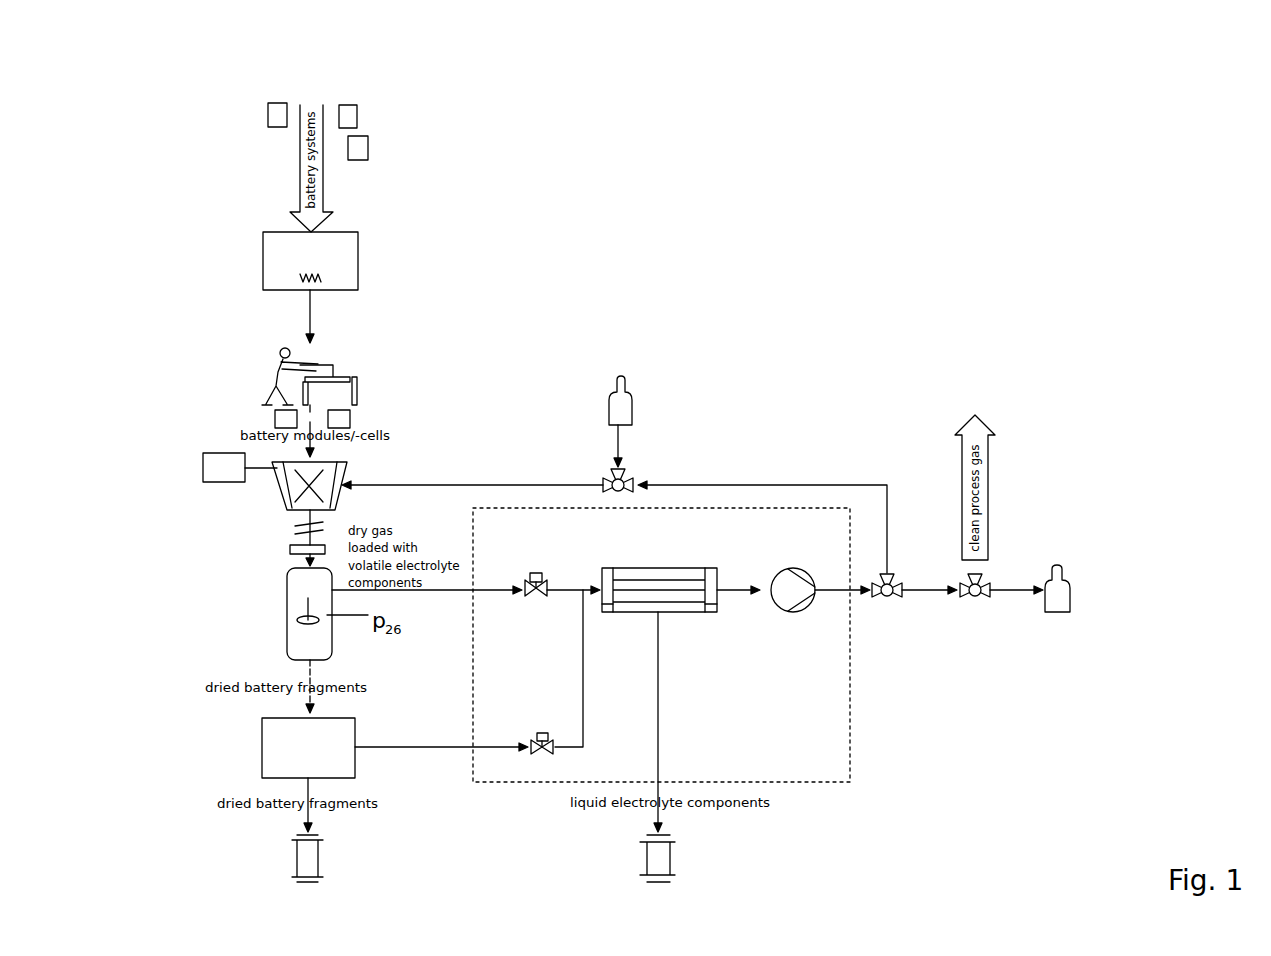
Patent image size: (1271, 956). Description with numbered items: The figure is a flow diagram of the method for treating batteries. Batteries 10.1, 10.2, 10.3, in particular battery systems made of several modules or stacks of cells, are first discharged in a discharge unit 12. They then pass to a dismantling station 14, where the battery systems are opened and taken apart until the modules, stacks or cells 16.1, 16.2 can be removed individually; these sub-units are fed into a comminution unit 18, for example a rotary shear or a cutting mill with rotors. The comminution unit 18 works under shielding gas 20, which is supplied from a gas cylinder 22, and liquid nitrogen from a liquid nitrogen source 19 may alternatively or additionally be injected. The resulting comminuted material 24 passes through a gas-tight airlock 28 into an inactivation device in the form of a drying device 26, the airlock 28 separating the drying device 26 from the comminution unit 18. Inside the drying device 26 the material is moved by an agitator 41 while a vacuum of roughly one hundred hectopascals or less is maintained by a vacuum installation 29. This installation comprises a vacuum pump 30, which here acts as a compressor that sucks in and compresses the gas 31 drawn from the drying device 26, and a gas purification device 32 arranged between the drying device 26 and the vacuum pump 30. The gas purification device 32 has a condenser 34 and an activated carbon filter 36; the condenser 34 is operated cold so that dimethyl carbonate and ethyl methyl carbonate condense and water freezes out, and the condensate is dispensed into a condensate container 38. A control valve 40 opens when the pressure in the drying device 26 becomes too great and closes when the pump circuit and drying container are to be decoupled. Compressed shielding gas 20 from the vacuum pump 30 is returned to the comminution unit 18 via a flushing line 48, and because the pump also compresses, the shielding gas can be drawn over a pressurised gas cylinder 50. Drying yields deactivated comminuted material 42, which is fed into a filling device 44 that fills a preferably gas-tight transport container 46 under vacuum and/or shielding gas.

The battery 10.1 is at (283, 103).
The battery 10.2 is at (350, 108).
The battery system 10.3 is at (365, 140).
The discharge unit 12 is at (353, 260).
The dismantling station 14 is at (389, 349).
The cell 16.1 is at (275, 418).
The cell 16.2 is at (350, 418).
The comminution unit 18 is at (333, 478).
The liquid nitrogen source 19 is at (240, 467).
The shielding gas 20 is at (465, 485).
The dry gas bottle 22 is at (627, 418).
The comminuted material 24 is at (330, 527).
The drying device 26 is at (293, 650).
The airlock 28 is at (290, 551).
The vacuum installation 29 is at (850, 708).
The vacuum pump 30 is at (805, 612).
The gas 31 is at (455, 593).
The gas purification device 32 is at (692, 568).
The condenser 34 is at (624, 609).
The activated carbon filter 36 is at (710, 610).
The condensate container 38 is at (663, 865).
The control valve 40 is at (537, 572).
The agitator 41 is at (317, 625).
The deactivated comminuted material 42 is at (312, 703).
The filling device 44 is at (308, 748).
The transport container 46 is at (315, 862).
The flushing line 48 is at (732, 483).
The pressurised gas cylinder 50 is at (1062, 598).